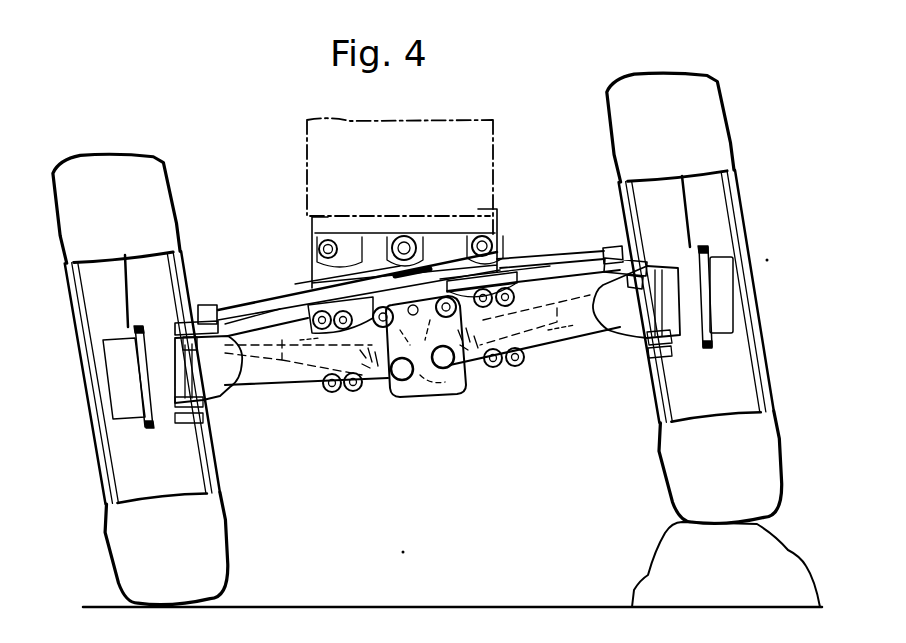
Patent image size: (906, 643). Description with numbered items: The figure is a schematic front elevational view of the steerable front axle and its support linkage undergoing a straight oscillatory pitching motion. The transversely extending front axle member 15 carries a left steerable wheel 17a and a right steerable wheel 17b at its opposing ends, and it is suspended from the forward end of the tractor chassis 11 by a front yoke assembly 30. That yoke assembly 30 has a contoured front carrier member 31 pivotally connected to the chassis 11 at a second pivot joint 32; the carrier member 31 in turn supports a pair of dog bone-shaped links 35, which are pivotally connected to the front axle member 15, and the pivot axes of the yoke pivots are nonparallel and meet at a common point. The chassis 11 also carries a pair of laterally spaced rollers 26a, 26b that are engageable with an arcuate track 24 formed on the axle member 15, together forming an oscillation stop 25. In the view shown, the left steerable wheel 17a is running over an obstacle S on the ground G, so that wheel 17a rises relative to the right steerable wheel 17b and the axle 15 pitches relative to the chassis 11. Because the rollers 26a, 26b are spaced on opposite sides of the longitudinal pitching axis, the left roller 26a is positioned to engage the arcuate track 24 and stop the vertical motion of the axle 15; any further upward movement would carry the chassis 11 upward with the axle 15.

The tractor chassis 11 is at (430, 120).
The front axle member 15 is at (277, 390).
The left steerable wheel 17a is at (680, 73).
The right steerable wheel 17b is at (140, 150).
The arcuate track 24 is at (258, 311).
The oscillation stop 25 is at (296, 212).
The left roller 26a is at (427, 257).
The right roller 26b is at (312, 280).
The front yoke assembly 30 is at (384, 426).
The front carrier member 31 is at (457, 390).
The second pivot joint 32 is at (403, 237).
The dog bone-shaped links 35 is at (310, 327).
The ground G is at (395, 606).
The obstacle S is at (642, 578).